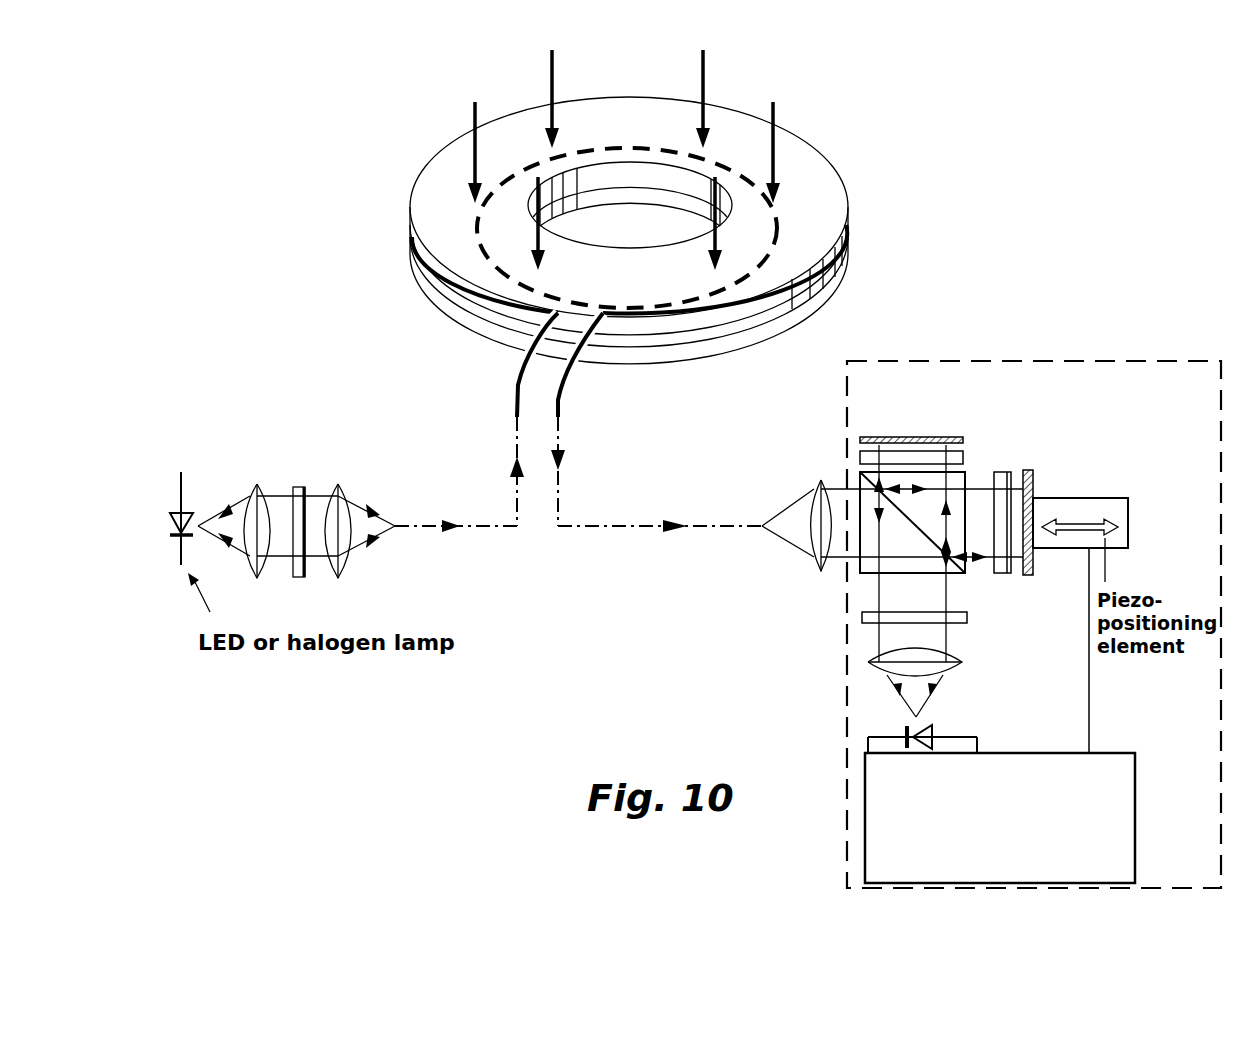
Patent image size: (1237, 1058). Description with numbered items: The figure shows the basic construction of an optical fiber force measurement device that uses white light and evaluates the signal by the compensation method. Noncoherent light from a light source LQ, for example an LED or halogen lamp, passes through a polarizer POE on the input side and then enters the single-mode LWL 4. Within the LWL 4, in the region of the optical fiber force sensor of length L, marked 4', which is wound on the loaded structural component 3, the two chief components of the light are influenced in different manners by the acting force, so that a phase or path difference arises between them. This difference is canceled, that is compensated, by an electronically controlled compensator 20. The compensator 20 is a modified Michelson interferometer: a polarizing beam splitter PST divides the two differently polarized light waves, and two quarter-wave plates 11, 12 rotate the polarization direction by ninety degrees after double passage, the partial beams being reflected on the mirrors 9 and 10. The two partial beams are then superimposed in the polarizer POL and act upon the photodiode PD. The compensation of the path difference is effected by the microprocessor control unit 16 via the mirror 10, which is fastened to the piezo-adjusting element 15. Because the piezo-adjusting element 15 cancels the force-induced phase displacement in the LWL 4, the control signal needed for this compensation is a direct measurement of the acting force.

The rotating disc / ring 3 is at (858, 208).
The optical fiber force sensor length 4' is at (601, 231).
The single-mode LWL 4 is at (577, 419).
The mirror 9 is at (938, 437).
The λ/4 plate 11 is at (965, 458).
The λ/4 plate 12 is at (1002, 470).
The mirror 10 is at (1028, 470).
The piezo-adjusting element 15 is at (1117, 507).
The microprocessor control unit 16 is at (1120, 801).
The compensator 20 is at (1190, 380).
The light source LQ is at (173, 532).
The polarizer POE is at (299, 487).
The polarizing beam splitter PST is at (866, 571).
The polarizer POL is at (861, 618).
The photodiode PD is at (928, 723).